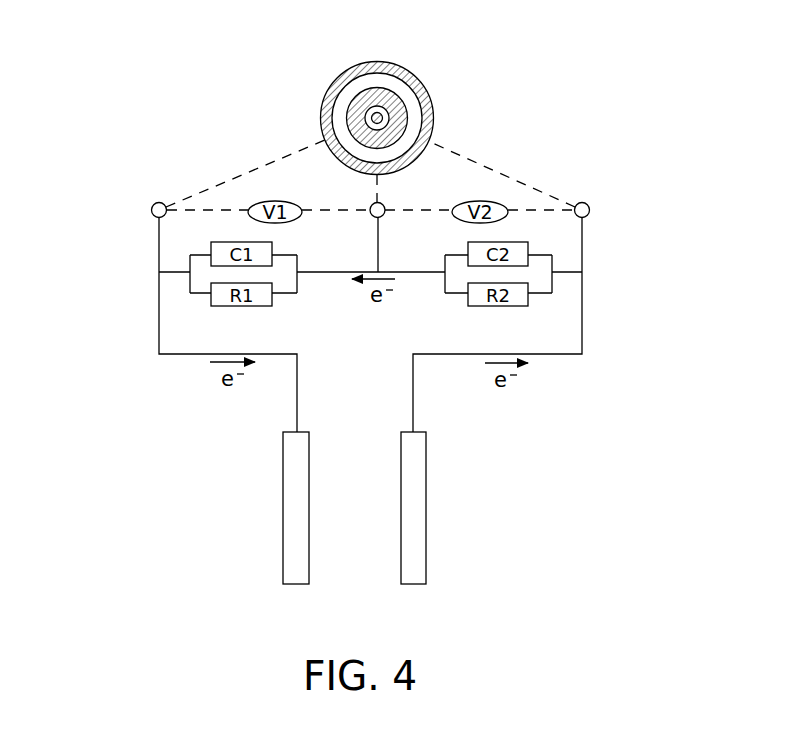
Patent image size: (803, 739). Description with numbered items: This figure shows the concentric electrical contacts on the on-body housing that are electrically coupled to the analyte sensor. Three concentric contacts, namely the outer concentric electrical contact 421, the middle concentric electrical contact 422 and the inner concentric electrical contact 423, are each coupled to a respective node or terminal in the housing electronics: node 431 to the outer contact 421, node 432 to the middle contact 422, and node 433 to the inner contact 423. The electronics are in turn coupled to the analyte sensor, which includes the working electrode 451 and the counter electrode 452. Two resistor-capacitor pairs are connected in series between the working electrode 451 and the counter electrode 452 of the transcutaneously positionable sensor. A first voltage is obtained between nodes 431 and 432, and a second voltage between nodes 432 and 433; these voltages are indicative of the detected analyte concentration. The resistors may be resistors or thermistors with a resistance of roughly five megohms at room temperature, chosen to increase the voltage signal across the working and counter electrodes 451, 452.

The outer concentric electrical contact 421 is at (362, 62).
The middle concentric electrical contact 422 is at (348, 115).
The inner concentric electrical contact 423 is at (385, 92).
The node 431 is at (150, 210).
The node 432 is at (388, 208).
The node 433 is at (592, 209).
The working electrode 451 is at (426, 552).
The counter electrode 452 is at (283, 552).